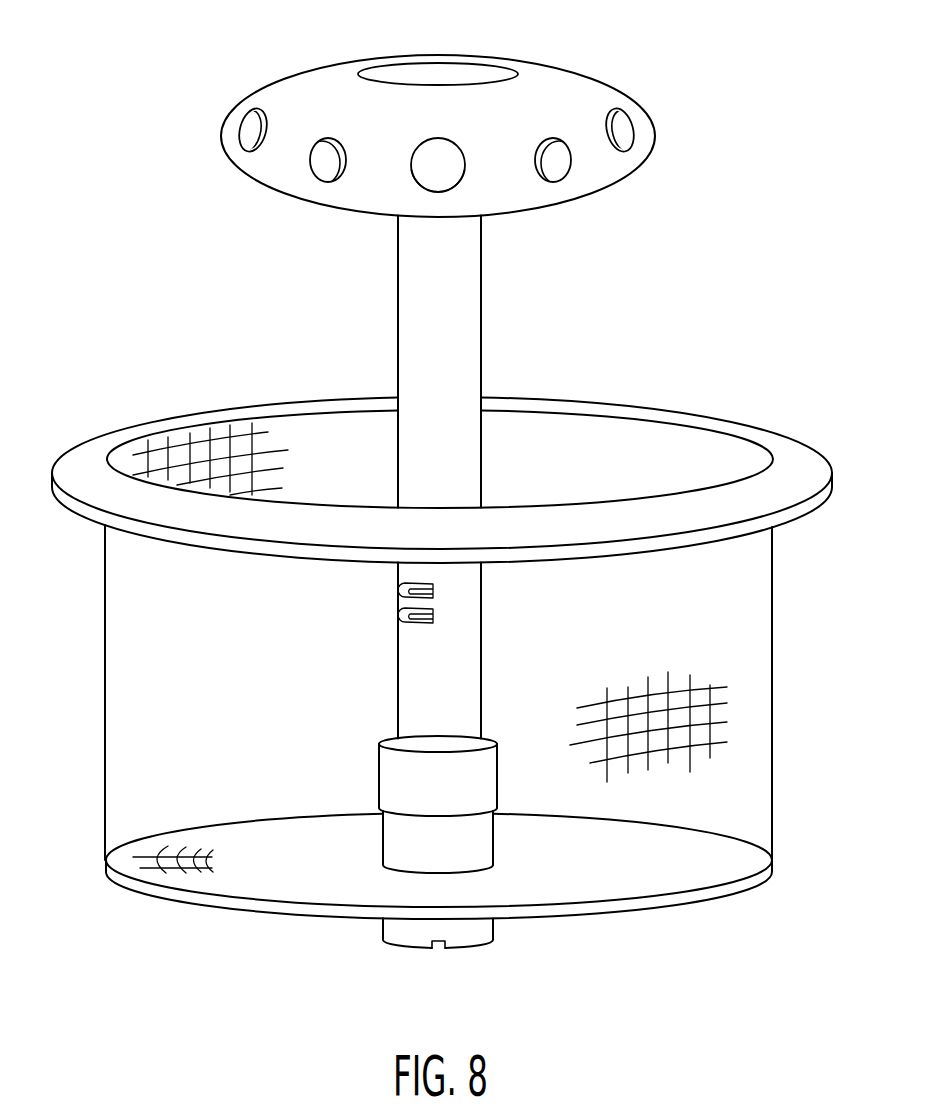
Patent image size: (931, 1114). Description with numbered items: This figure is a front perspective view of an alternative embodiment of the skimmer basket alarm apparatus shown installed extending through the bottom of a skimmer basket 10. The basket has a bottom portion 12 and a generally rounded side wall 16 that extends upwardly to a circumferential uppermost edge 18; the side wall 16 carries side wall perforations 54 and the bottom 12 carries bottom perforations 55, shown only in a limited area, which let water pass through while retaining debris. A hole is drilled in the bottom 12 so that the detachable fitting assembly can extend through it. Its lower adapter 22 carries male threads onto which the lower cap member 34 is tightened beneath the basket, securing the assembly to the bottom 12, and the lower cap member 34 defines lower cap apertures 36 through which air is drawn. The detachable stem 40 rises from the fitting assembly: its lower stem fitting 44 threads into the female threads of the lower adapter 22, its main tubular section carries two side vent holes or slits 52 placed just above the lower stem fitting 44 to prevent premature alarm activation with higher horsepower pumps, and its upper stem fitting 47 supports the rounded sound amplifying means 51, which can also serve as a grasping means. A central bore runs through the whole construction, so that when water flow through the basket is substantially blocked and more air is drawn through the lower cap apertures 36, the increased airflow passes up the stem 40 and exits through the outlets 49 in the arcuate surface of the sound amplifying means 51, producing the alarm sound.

The skimmer basket 10 is at (710, 418).
The bottom portion 12 is at (622, 875).
The side wall 16 is at (772, 690).
The uppermost edge 18 is at (809, 483).
The lower adapter 22 is at (451, 857).
The lower cap member 34 is at (383, 945).
The lower cap apertures 36 is at (438, 950).
The detachable stem 40 is at (454, 347).
The lower stem fitting 44 is at (452, 793).
The upper stem fitting 47 is at (517, 121).
The outlets 49 is at (434, 173).
The sound amplifying means 51 is at (435, 153).
The side vent holes or slits 52 is at (398, 611).
The side wall perforations 54 is at (178, 452).
The bottom perforations 55 is at (165, 865).